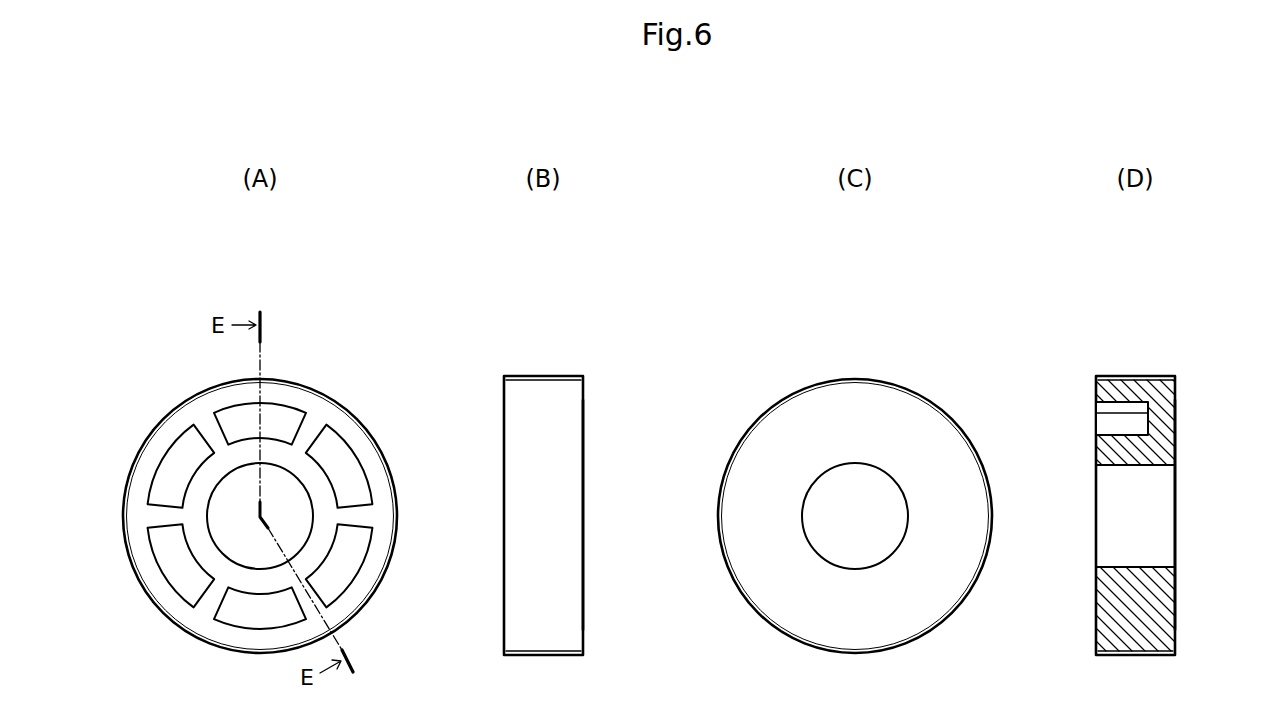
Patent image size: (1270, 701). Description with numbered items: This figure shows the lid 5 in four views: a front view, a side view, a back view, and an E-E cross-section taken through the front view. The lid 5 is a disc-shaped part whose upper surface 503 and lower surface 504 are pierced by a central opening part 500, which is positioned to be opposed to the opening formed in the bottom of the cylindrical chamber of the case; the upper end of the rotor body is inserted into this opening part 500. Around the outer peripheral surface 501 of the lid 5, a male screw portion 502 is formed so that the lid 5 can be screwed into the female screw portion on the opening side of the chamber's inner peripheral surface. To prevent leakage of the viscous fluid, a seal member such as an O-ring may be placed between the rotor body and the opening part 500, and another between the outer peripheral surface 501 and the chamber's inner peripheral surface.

The lid 5 is at (1184, 251).
The opening part 500 is at (718, 469).
The outer peripheral surface 501 is at (650, 464).
The male screw portion 502 is at (776, 476).
The upper surface 503 is at (641, 490).
The lower surface 504 is at (914, 478).